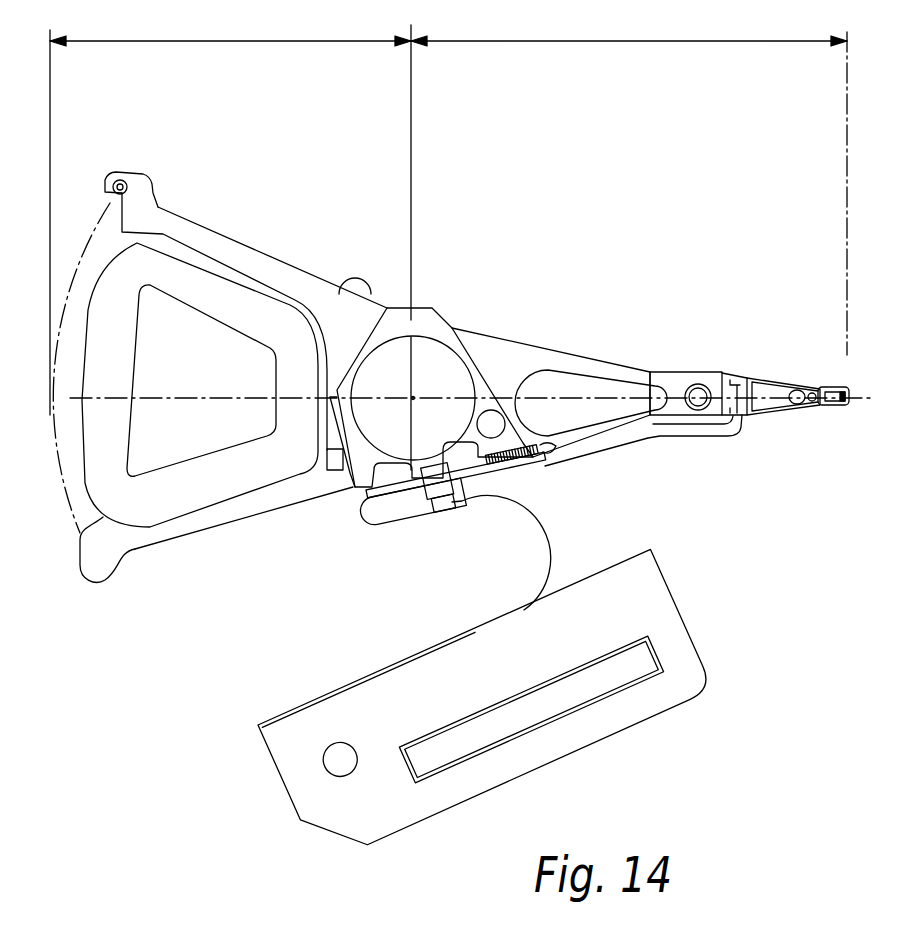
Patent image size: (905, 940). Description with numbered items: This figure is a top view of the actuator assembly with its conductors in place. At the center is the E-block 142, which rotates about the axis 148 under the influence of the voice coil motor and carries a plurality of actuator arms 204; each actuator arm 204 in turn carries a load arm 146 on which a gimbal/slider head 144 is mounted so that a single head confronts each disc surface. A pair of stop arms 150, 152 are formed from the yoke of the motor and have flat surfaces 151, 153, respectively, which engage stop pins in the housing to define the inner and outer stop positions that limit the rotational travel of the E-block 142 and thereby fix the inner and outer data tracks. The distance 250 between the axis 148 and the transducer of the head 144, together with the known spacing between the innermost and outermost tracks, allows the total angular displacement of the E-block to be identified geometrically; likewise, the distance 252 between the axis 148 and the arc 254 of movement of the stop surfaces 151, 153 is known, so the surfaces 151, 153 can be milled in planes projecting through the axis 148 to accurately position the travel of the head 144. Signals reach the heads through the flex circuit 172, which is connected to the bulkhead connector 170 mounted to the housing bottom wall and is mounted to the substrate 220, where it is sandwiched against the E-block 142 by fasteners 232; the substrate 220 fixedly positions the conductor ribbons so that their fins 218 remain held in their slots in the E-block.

The E-block 142 is at (442, 320).
The head 144 is at (836, 388).
The load arm 146 is at (763, 414).
The axis 148 is at (415, 398).
The stop arm 150 is at (80, 566).
The flat surface 151 is at (100, 577).
The stop arm 152 is at (105, 188).
The flat surface 153 is at (146, 175).
The bulkhead connector 170 is at (686, 626).
The flex circuit 172 is at (546, 541).
The actuator arm 204 is at (575, 352).
The fin 218 is at (570, 446).
The substrate 220 is at (493, 476).
The fastener 232 is at (441, 530).
The distance 250 is at (639, 42).
The distance 252 is at (247, 42).
The arc 254 is at (53, 447).